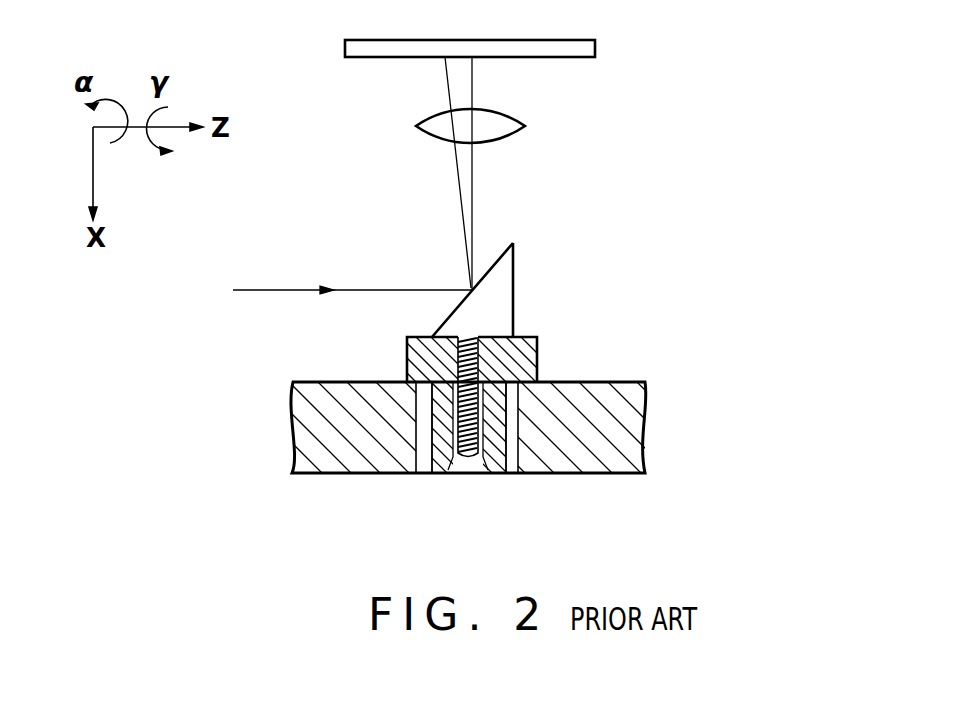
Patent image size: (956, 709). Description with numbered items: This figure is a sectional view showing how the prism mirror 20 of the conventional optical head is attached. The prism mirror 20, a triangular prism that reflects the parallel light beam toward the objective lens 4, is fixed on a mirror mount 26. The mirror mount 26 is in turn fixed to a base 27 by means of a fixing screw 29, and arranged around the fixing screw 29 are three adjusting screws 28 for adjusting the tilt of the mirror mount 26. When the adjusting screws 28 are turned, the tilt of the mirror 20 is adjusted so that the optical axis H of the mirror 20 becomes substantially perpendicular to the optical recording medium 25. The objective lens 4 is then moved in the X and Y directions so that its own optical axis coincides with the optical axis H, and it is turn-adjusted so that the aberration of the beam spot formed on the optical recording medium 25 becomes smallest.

The optical recording medium 25 is at (580, 57).
The objective lens 4 is at (523, 127).
The optical axis H is at (473, 205).
The prism mirror 20 is at (513, 316).
The mirror mount 26 is at (537, 353).
The base 27 is at (620, 458).
The adjusting screws 28 is at (427, 464).
The fixing screw 29 is at (468, 462).